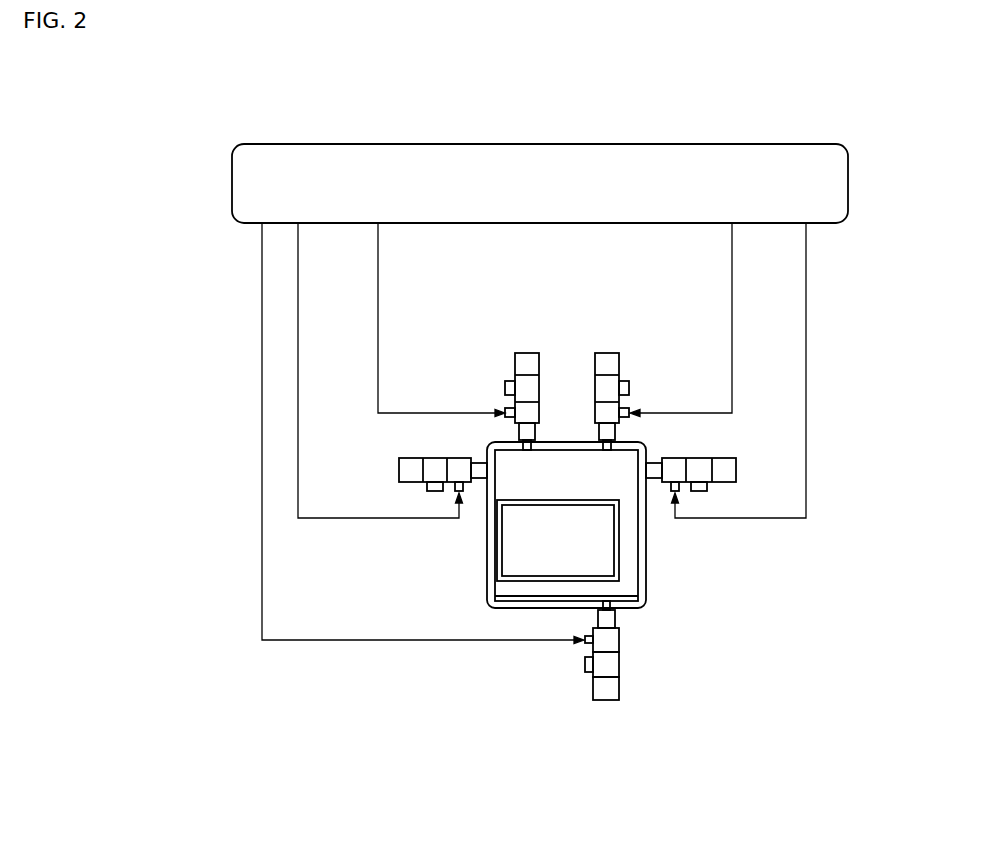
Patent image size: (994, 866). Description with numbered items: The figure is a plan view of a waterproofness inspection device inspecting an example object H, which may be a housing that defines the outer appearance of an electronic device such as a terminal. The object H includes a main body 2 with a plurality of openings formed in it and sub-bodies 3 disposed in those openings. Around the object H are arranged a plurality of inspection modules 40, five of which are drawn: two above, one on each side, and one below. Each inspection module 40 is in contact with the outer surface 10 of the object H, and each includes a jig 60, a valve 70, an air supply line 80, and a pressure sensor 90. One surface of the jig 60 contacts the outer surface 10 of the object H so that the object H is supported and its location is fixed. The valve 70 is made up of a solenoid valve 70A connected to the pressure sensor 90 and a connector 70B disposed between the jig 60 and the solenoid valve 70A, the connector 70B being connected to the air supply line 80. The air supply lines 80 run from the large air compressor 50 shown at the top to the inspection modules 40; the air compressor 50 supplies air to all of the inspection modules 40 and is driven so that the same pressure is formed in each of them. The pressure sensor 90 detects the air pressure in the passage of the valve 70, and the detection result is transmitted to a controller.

The air compressor 50 is at (688, 144).
The inspection module 40 is at (511, 330).
The air supply line 80 is at (519, 642).
The outer surface 10 is at (647, 532).
The sub-body 3 is at (615, 451).
The main body 2 is at (640, 570).
The object H is at (604, 517).
The jig 60 is at (617, 614).
The valve 70 is at (672, 654).
The solenoid valve 70A is at (607, 663).
The connector 70B is at (607, 637).
The pressure sensor 90 is at (607, 689).